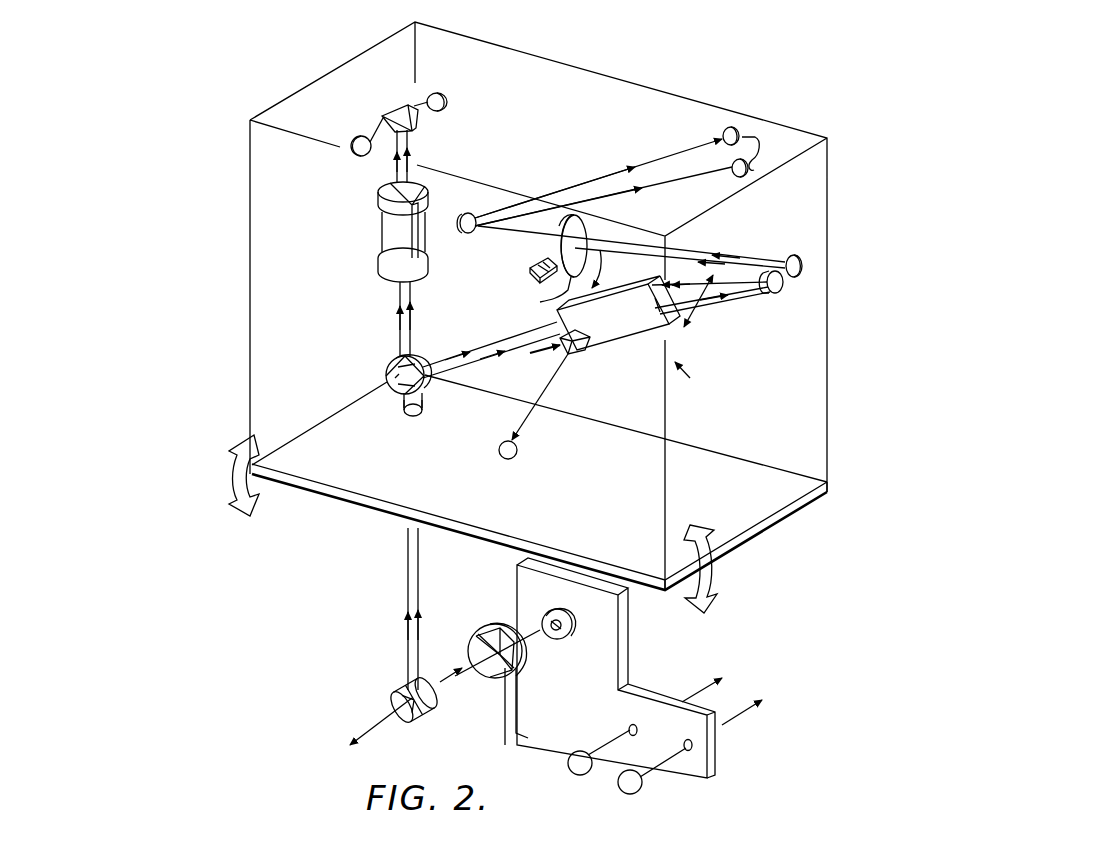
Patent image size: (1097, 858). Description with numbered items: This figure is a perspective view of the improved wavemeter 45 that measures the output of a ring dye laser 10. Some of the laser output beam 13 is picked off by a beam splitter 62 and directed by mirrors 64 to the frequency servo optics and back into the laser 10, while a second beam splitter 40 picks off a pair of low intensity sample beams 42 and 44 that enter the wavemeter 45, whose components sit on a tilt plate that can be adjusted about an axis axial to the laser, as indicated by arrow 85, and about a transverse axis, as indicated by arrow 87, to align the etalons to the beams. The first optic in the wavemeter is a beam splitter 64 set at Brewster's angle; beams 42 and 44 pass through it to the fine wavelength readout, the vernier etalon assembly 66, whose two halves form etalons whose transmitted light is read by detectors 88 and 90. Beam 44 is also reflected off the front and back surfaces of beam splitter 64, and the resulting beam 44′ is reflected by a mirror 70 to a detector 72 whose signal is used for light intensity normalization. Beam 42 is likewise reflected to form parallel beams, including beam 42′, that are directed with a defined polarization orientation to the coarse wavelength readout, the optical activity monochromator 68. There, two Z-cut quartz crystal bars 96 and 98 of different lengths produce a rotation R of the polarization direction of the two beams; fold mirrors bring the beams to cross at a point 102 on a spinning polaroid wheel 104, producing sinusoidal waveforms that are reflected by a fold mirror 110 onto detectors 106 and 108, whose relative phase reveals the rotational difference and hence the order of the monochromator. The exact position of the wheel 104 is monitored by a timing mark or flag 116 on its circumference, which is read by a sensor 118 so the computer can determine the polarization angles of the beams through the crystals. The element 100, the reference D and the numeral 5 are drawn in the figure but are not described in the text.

The ring dye laser 10 is at (516, 588).
The laser output beam 13 is at (372, 726).
The beam splitter 40 is at (424, 726).
The light beam 42 is at (419, 570).
The light beam 44 is at (406, 586).
The beam 42′ is at (478, 370).
The beam 44′ is at (424, 396).
The wavemeter 45 is at (250, 258).
The beam splitting surface 5 is at (494, 678).
The beam splitter 62 is at (478, 638).
The beam splitter 64 is at (386, 368).
The vernier etalon assembly 66 is at (382, 234).
The optical activity monochromator 68 is at (697, 377).
The mirror 70 is at (578, 358).
The detector 72 is at (500, 445).
The arrow 85 is at (712, 574).
The arrow 87 is at (236, 466).
The detector 88 is at (446, 90).
The detector 90 is at (356, 155).
The quartz crystal bar 96 is at (624, 345).
The quartz crystal bar 98 is at (636, 272).
The light source 100 is at (790, 278).
The crossing point 102 is at (587, 238).
The spinning polaroid wheel 104 is at (580, 222).
The detector 106 is at (722, 133).
The detector 108 is at (732, 166).
The fold mirror 110 is at (462, 232).
The timing mark or flag 116 is at (540, 302).
The sensor 118 is at (528, 280).
The rotation R is at (690, 330).
The detector pair D is at (759, 150).